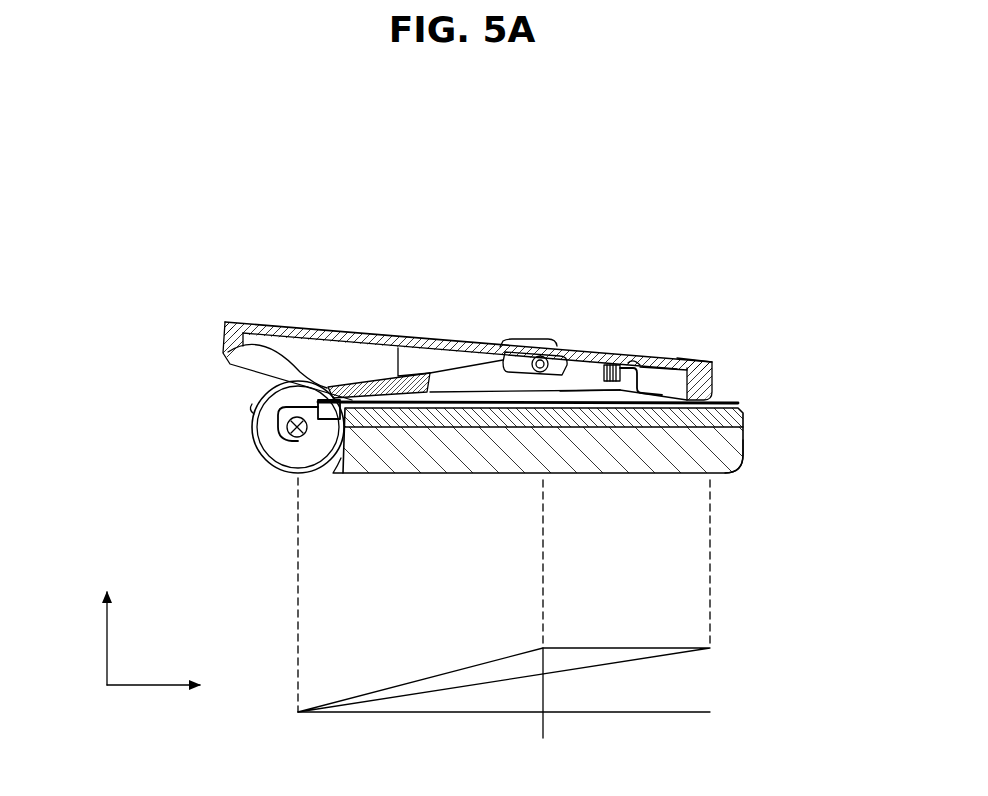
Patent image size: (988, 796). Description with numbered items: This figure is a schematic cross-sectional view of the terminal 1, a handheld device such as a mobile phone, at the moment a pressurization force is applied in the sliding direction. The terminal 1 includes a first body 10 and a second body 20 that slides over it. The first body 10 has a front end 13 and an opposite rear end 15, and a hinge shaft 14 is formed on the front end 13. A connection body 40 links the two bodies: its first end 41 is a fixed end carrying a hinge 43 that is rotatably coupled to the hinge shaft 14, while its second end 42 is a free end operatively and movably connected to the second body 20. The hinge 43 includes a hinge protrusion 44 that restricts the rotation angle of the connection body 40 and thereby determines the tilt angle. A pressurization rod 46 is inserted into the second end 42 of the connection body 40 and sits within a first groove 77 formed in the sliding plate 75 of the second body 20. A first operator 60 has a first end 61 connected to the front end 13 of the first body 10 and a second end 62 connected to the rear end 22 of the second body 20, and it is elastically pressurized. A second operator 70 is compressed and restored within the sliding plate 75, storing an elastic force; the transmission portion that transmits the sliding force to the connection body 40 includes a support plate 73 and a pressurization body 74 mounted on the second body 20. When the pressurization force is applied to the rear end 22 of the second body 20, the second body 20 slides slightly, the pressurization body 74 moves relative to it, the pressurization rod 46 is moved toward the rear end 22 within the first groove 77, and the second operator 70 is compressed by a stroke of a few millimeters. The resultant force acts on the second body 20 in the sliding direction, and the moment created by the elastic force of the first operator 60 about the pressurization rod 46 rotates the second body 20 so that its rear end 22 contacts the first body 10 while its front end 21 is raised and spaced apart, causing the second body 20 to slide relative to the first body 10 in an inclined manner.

The terminal 1 is at (505, 146).
The first body 10 is at (377, 484).
The front end of the first body 13 is at (345, 477).
The hinge shaft 14 is at (287, 424).
The rear end of the first body 15 is at (740, 442).
The second body 20 is at (411, 327).
The front end of the second body 21 is at (236, 322).
The rear end of the second body 22 is at (703, 365).
The connection body 40 is at (343, 331).
The first end of the connection body 41 is at (343, 372).
The second end of the connection body 42 is at (540, 355).
The hinge 43 is at (260, 383).
The hinge protrusion 44 is at (257, 407).
The pressurization rod 46 is at (566, 380).
The first operator 60 is at (459, 406).
The first end of the first operator 61 is at (283, 438).
The second end of the first operator 62 is at (657, 376).
The second operator 70 is at (636, 366).
The support plate 73 is at (592, 392).
The pressurization body 74 is at (613, 362).
The sliding plate 75 is at (467, 358).
The first groove 77 is at (520, 338).